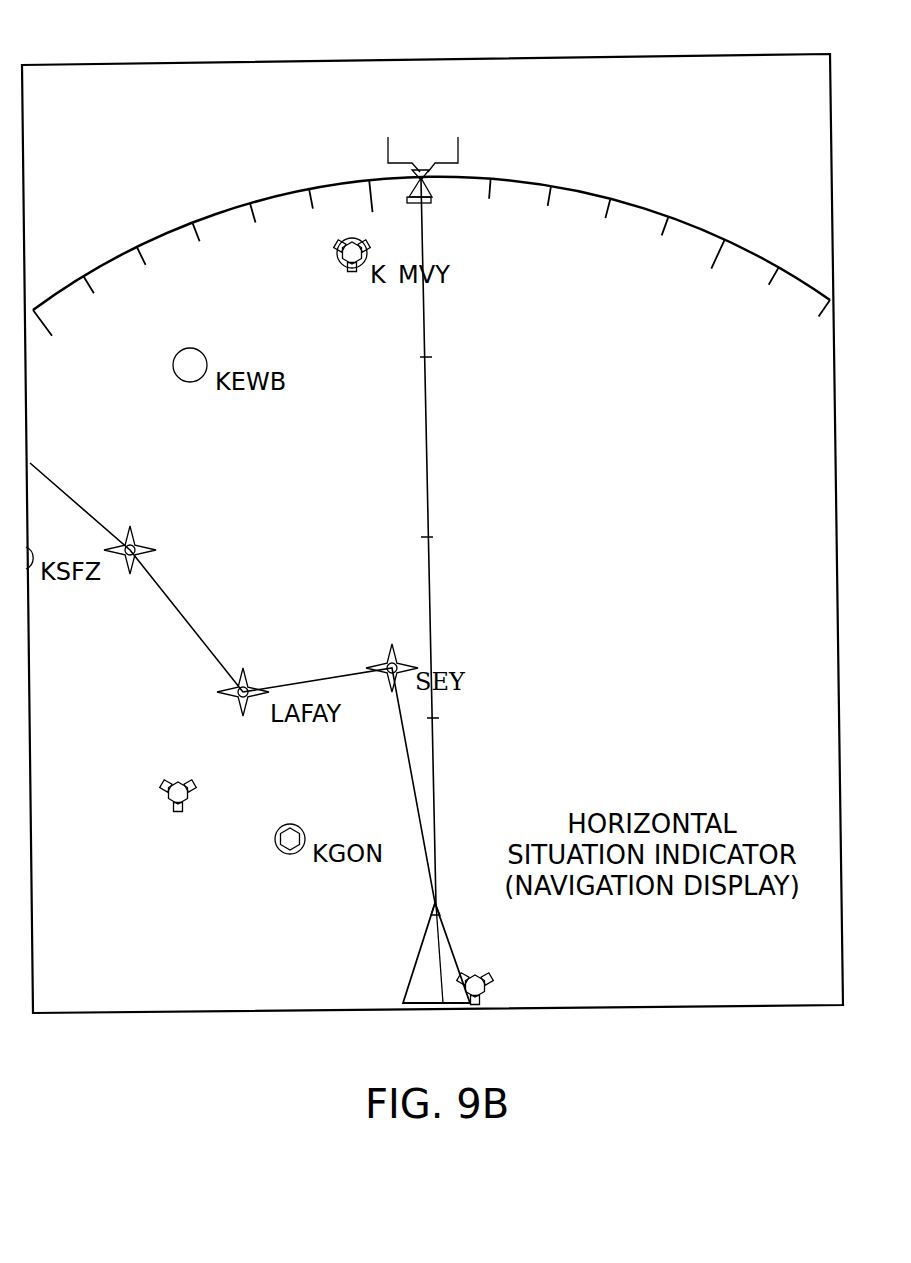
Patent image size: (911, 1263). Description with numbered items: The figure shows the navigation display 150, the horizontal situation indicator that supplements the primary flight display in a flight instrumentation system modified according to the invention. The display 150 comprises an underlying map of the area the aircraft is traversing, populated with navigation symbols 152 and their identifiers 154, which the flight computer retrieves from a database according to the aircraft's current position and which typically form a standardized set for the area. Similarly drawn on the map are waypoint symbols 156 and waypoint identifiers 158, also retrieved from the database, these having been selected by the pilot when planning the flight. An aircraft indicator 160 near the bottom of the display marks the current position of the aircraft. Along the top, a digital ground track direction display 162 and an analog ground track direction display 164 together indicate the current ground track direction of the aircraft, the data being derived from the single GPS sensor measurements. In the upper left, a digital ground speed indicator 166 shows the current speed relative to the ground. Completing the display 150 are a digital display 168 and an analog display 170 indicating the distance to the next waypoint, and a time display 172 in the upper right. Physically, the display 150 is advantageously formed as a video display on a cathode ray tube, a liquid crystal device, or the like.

The navigation display 150 is at (648, 390).
The navigation symbols 152 is at (195, 785).
The identifiers 154 is at (238, 805).
The waypoint symbols 156 is at (131, 534).
The waypoint identifiers 158 is at (203, 548).
The aircraft indicator 160 is at (450, 938).
The digital ground track direction display 162 is at (419, 133).
The analog ground track direction display 164 is at (328, 182).
The digital ground speed indicator 166 is at (155, 118).
The digital distance display 168 is at (158, 155).
The analog distance display 170 is at (428, 380).
The time display 172 is at (716, 122).